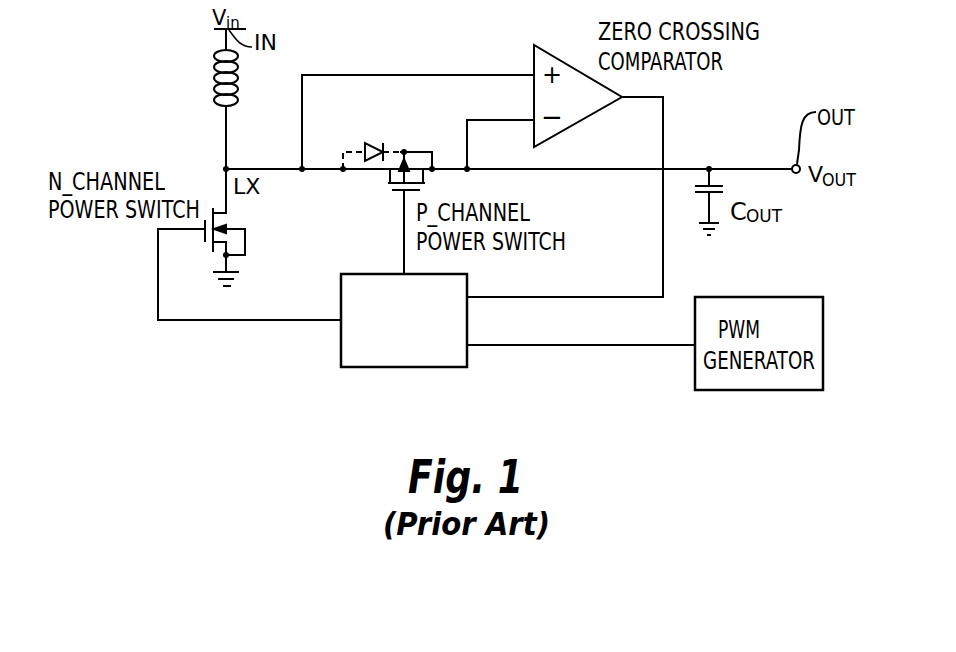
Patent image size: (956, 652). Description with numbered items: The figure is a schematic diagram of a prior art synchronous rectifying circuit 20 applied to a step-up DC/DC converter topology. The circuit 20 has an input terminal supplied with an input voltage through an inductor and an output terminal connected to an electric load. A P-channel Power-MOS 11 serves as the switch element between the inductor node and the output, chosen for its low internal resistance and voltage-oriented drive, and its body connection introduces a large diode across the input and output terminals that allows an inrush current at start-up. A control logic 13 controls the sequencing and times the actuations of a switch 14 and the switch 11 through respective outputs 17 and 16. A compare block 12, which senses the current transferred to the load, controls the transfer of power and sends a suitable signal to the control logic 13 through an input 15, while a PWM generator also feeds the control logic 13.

The P-channel Power-MOS 11 is at (383, 180).
The compare block 12 is at (530, 62).
The control logic 13 is at (425, 368).
The switch 14 is at (212, 180).
The input 15 is at (470, 293).
The output 16 is at (400, 272).
The output 17 is at (340, 318).
The synchronous rectifying circuit 20 is at (752, 102).